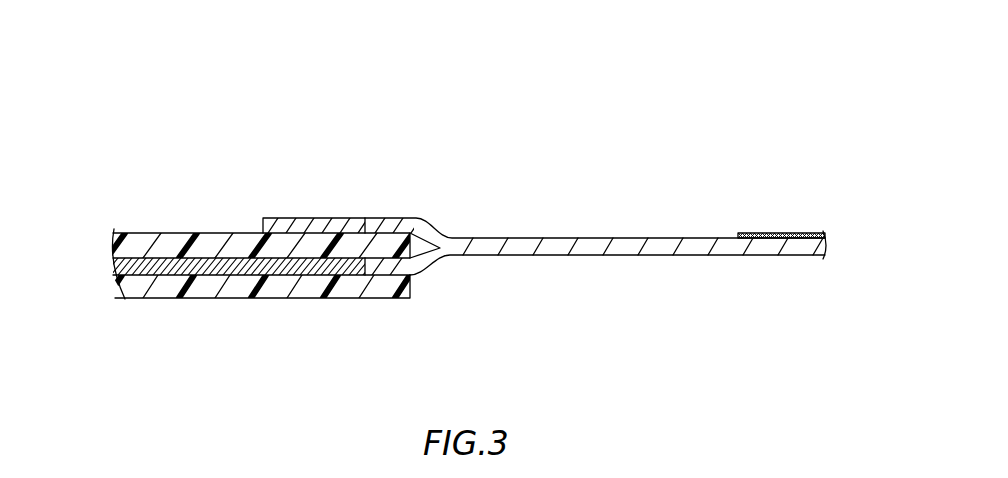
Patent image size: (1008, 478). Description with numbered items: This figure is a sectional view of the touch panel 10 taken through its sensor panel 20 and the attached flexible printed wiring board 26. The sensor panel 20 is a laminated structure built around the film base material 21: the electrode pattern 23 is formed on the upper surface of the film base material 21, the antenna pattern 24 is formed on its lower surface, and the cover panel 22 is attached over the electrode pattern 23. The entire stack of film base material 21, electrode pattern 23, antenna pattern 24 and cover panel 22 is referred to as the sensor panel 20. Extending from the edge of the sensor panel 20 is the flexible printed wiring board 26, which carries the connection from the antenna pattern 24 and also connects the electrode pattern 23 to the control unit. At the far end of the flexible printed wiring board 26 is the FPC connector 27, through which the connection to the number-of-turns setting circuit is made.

The electrode assembly 10 is at (384, 120).
The sensor panel 20 is at (499, 144).
The film base material 21 is at (180, 243).
The cover panel 22 is at (216, 287).
The electrode pattern 23 is at (318, 268).
The antenna pattern 24 is at (322, 227).
The flexible printed wiring board 26 is at (613, 255).
The FPC connector 27 is at (785, 233).